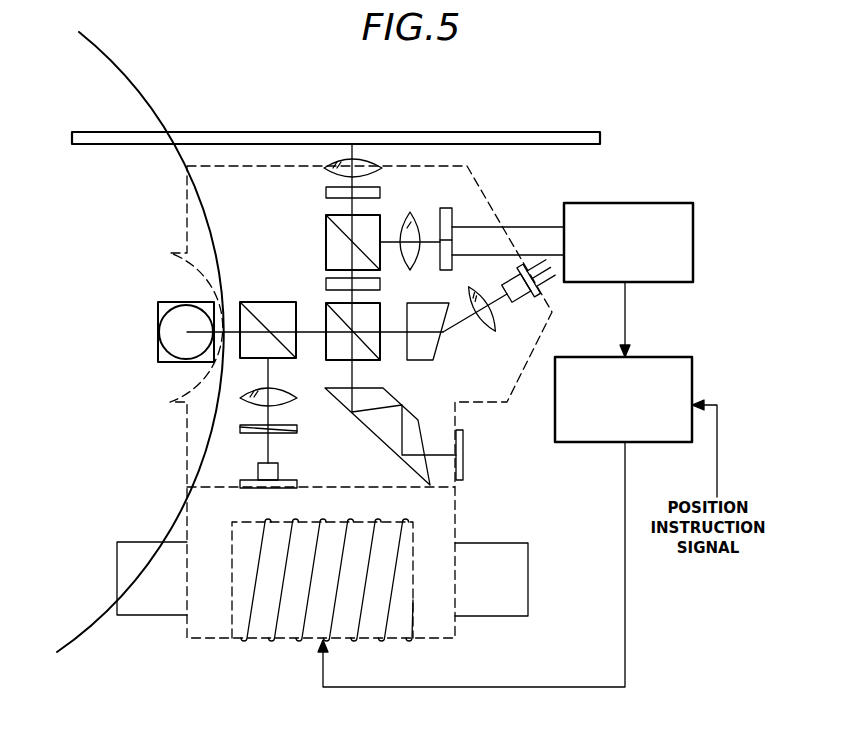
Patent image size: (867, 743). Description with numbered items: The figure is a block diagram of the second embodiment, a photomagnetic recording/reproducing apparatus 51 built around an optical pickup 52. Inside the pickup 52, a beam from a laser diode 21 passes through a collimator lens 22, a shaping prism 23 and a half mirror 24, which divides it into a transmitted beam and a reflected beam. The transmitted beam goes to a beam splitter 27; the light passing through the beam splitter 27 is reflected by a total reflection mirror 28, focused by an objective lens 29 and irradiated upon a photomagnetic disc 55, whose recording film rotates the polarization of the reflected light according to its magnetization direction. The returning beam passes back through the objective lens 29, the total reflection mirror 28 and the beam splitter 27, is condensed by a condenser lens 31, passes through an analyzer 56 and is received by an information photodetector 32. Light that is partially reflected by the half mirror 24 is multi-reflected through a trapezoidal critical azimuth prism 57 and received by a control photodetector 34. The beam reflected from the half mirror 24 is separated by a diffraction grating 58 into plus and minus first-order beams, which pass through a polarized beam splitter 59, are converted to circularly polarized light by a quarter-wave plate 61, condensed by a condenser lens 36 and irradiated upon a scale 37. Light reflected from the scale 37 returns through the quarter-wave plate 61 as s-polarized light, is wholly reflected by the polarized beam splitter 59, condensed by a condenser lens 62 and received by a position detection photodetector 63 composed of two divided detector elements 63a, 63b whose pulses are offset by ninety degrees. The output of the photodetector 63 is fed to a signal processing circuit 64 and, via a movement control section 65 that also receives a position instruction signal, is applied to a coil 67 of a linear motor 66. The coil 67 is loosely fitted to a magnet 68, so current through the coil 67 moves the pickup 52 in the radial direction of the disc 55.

The laser diode 21 is at (516, 300).
The collimator lens 22 is at (491, 331).
The shaping prism 23 is at (430, 361).
The half mirror 24 is at (380, 345).
The beam splitter 27 is at (258, 302).
The total reflection mirror 28 is at (158, 350).
The objective lens 29 is at (175, 325).
The condenser lens 31 is at (297, 400).
The information photodetector 32 is at (258, 471).
The control photodetector 34 is at (463, 460).
The condenser lens 36 is at (372, 170).
The scale 37 is at (388, 132).
The photomagnetic recording/reproducing apparatus 51 is at (362, 107).
The optical pickup 52 is at (507, 402).
The photomagnetic disc 55 is at (97, 617).
The analyzer 56 is at (297, 431).
The trapezoidal critical azimuth prism 57 is at (380, 430).
The diffraction grating 58 is at (326, 284).
The polarized beam splitter 59 is at (326, 240).
The λ/4 plate 61 is at (326, 192).
The condenser lens 62 is at (415, 255).
The position detection photodetector 63 is at (445, 208).
The photodetector element 63a is at (448, 218).
The photodetector element 63b is at (452, 260).
The signal processing circuit 64 is at (693, 250).
The movement control section 65 is at (645, 444).
The linear motor 66 is at (285, 643).
The coil 67 is at (363, 623).
The magnet 68 is at (500, 603).